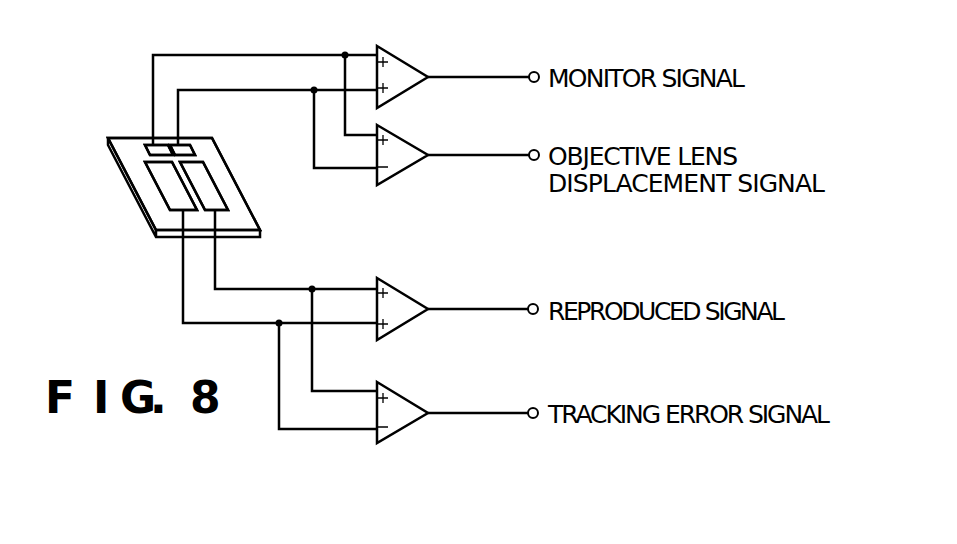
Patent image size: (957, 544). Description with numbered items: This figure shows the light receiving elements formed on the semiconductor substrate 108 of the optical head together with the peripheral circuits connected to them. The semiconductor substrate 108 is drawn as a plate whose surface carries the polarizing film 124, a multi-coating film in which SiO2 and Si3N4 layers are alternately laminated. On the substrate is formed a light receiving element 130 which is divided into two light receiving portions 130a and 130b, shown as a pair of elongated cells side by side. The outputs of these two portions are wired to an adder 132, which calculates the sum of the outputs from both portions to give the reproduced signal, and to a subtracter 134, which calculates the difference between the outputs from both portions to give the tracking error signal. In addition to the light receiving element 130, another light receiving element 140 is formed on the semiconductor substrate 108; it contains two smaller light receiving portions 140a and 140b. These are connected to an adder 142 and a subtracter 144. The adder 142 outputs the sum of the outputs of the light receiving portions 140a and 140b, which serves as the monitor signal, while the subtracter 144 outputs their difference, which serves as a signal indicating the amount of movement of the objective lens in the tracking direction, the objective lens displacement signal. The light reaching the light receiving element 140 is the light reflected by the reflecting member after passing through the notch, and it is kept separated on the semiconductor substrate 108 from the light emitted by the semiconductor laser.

The semiconductor substrate 108 is at (233, 173).
The polarizing film 124 is at (207, 150).
The light receiving element 130 is at (157, 227).
The light receiving portion 130a is at (160, 190).
The light receiving portion 130b is at (228, 195).
The adder 132 is at (405, 303).
The subtracter 134 is at (413, 407).
The light receiving element 140 is at (133, 152).
The light receiving portion 140a is at (147, 143).
The light receiving portion 140b is at (188, 150).
The adder 142 is at (415, 67).
The subtracter 144 is at (415, 150).